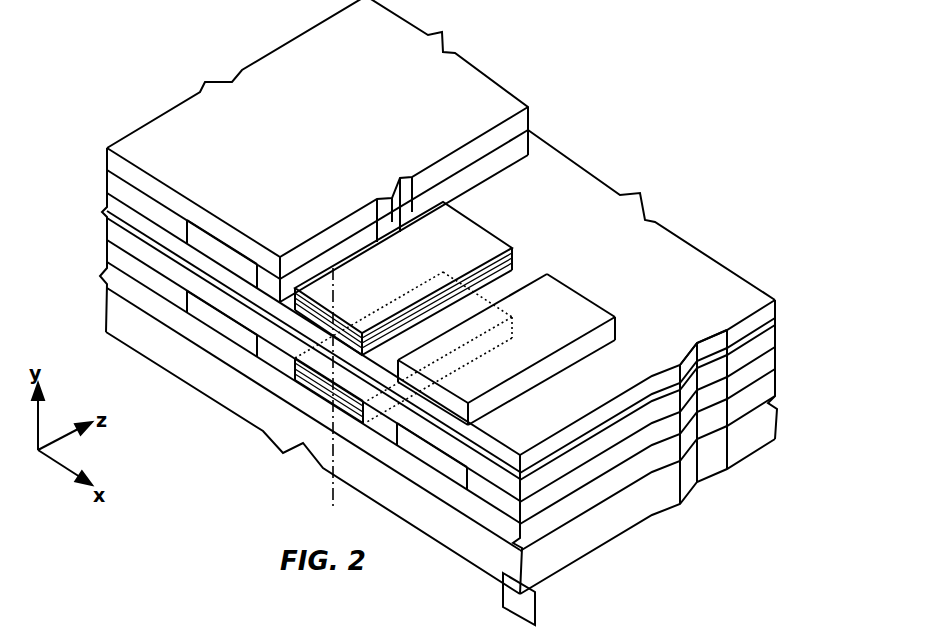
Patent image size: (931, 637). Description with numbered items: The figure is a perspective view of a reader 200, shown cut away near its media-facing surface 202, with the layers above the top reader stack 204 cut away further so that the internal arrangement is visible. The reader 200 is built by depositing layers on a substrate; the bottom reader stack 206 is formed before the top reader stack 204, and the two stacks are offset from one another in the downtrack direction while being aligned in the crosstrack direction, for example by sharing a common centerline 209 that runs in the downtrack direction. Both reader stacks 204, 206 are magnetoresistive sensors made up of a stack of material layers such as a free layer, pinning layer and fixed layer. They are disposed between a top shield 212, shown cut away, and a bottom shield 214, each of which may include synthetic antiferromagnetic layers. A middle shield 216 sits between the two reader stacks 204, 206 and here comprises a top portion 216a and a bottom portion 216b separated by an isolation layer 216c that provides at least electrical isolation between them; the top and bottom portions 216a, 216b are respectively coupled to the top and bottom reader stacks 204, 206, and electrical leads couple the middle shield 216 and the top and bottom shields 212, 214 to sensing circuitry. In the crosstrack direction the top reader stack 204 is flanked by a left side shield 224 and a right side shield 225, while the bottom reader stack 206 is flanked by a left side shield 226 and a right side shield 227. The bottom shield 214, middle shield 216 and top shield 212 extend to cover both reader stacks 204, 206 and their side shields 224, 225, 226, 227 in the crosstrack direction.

The reader 200 is at (679, 156).
The media-facing surface 202 is at (537, 603).
The top reader stack 204 is at (488, 233).
The bottom reader stack 206 is at (513, 290).
The common centerline 209 is at (334, 509).
The top shield 212 is at (315, 50).
The bottom shield 214 is at (243, 357).
The middle shield 216 is at (679, 408).
The top portion of middle shield 216a is at (672, 378).
The bottom portion of middle shield 216b is at (635, 423).
The isolation layer 216c is at (710, 358).
The left side shield 224 is at (227, 258).
The right side shield 225 is at (586, 296).
The left side shield 226 is at (210, 313).
The right side shield 227 is at (440, 467).